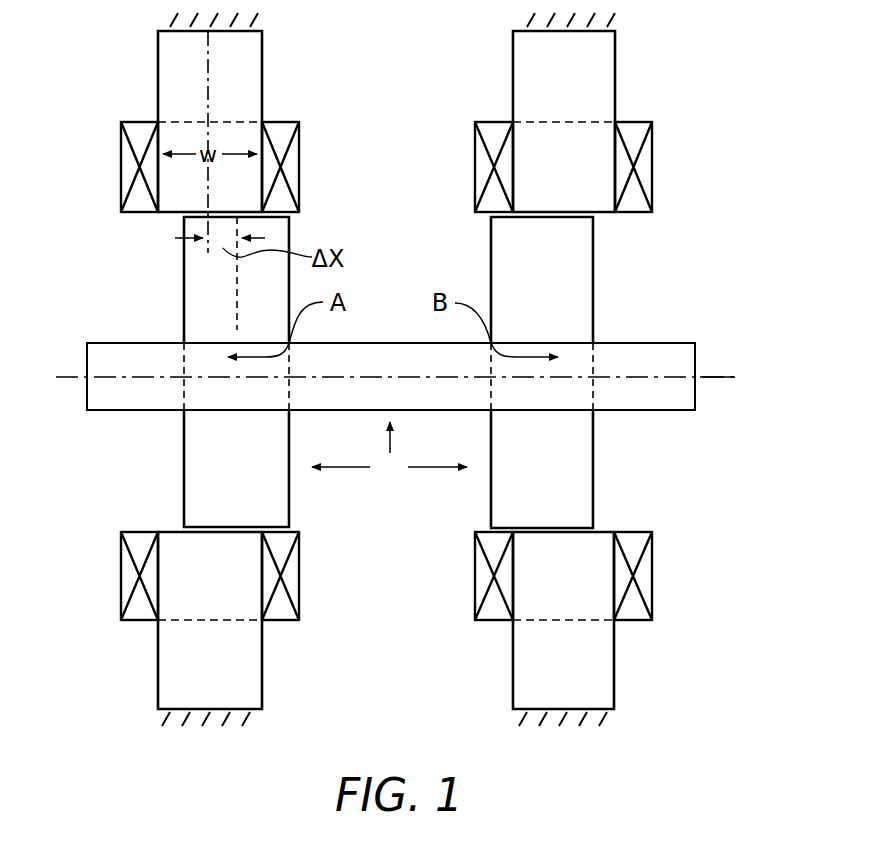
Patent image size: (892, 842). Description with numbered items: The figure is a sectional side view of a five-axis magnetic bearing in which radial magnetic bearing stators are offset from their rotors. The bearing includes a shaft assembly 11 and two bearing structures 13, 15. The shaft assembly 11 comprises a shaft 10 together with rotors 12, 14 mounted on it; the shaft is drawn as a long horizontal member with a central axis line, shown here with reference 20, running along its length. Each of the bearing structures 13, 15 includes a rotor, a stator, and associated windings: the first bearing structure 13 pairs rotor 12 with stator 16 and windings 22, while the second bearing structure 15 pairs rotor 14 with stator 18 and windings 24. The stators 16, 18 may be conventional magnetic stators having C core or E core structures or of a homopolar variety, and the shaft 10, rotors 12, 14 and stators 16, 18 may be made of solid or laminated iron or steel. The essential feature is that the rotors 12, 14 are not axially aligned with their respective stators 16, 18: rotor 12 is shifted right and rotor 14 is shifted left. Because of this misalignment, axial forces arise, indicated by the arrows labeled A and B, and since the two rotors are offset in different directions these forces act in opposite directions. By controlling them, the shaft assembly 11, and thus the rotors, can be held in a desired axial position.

The shaft 10 is at (377, 371).
The shaft assembly 11 is at (389, 452).
The rotor 12 is at (195, 310).
The bearing structure 13 is at (94, 224).
The rotor 14 is at (500, 310).
The bearing structure 15 is at (672, 224).
The stator 16 is at (170, 93).
The stator 18 is at (525, 93).
The shaft axis 20 is at (715, 377).
The windings 22 is at (143, 130).
The windings 24 is at (497, 132).